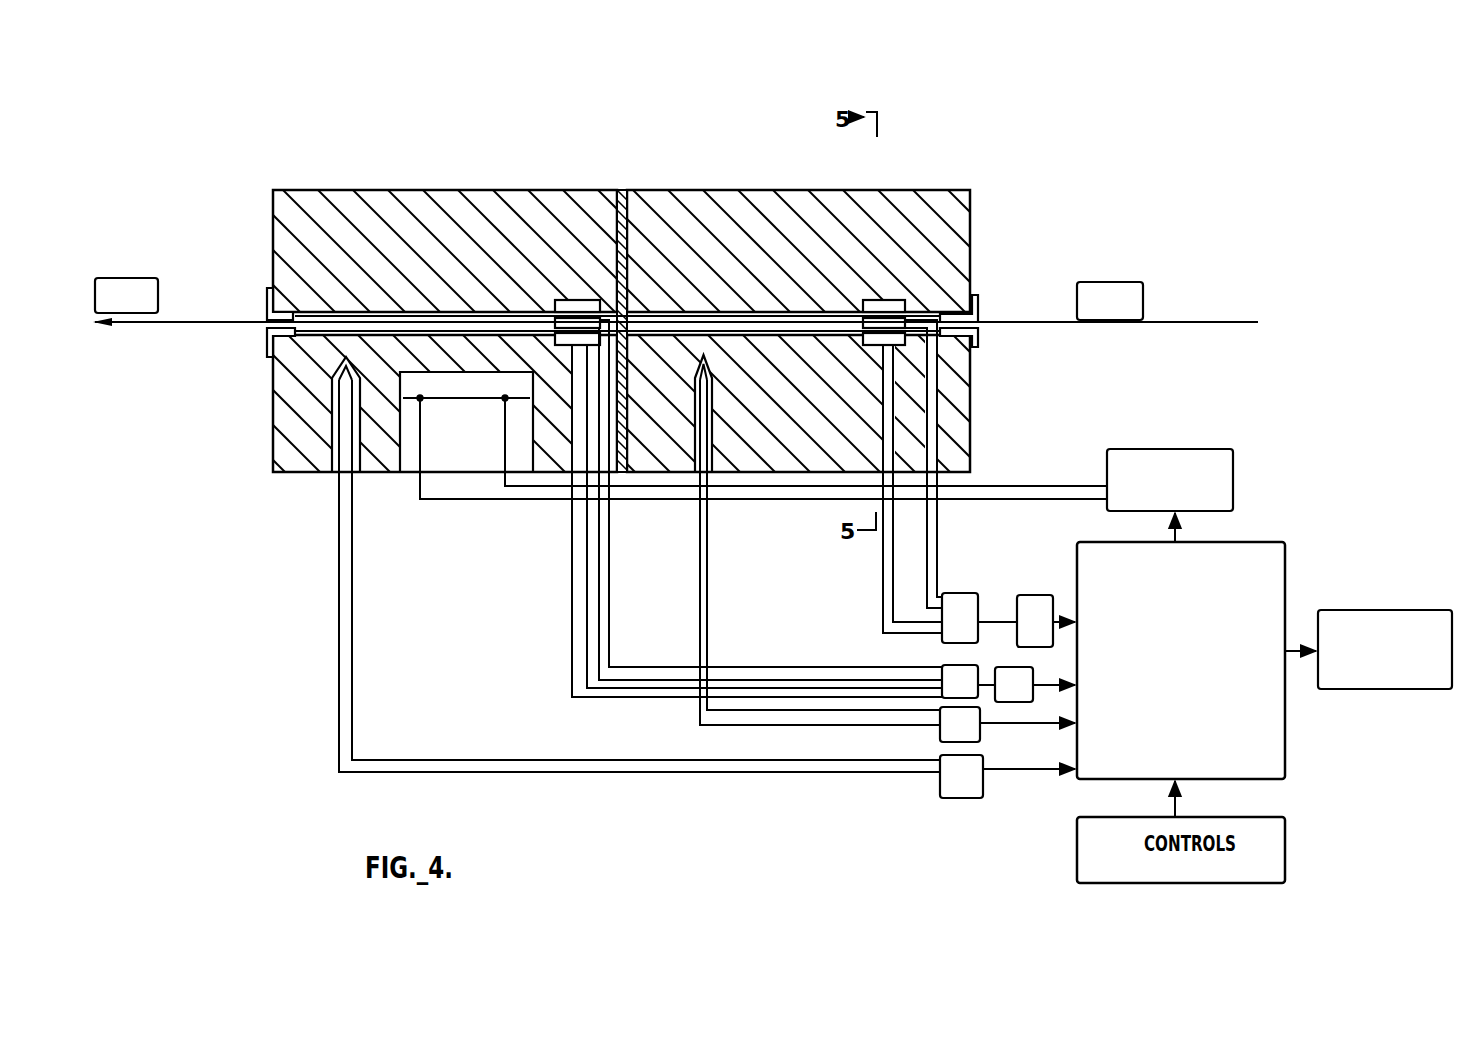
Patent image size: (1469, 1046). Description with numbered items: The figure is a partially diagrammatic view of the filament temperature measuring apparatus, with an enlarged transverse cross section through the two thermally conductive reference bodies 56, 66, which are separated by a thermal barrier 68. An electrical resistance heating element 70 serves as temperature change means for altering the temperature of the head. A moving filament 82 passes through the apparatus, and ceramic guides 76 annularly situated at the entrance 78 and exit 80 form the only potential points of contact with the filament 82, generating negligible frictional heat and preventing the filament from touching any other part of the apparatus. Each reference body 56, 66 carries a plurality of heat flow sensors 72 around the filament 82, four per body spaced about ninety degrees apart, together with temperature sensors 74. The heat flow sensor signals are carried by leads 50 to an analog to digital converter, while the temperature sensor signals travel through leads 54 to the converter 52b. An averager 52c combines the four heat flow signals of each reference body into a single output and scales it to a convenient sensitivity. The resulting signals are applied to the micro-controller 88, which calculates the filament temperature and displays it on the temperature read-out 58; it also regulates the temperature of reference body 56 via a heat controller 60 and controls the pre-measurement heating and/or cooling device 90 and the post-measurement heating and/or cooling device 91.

The leads 50 is at (608, 638).
The converter 52b is at (942, 666).
The averager 52c is at (1012, 667).
The leads 54 is at (351, 647).
The reference body 56 is at (392, 192).
The temperature read-out 58 is at (1405, 610).
The heat controller 60 is at (1205, 449).
The reference body 66 is at (728, 192).
The thermal barrier 68 is at (622, 195).
The electrical resistance heating element 70 is at (445, 378).
The heat flow sensors 72 is at (582, 320).
The temperature sensors 74 is at (343, 478).
The guides 76 is at (267, 306).
The entrance 78 is at (986, 333).
The exit 80 is at (258, 330).
The filament 82 is at (1195, 322).
The micro-controller 88 is at (1258, 542).
The pre-measurement heating and/or cooling device 90 is at (1122, 313).
The post-measurement heating and/or cooling device 91 is at (140, 308).